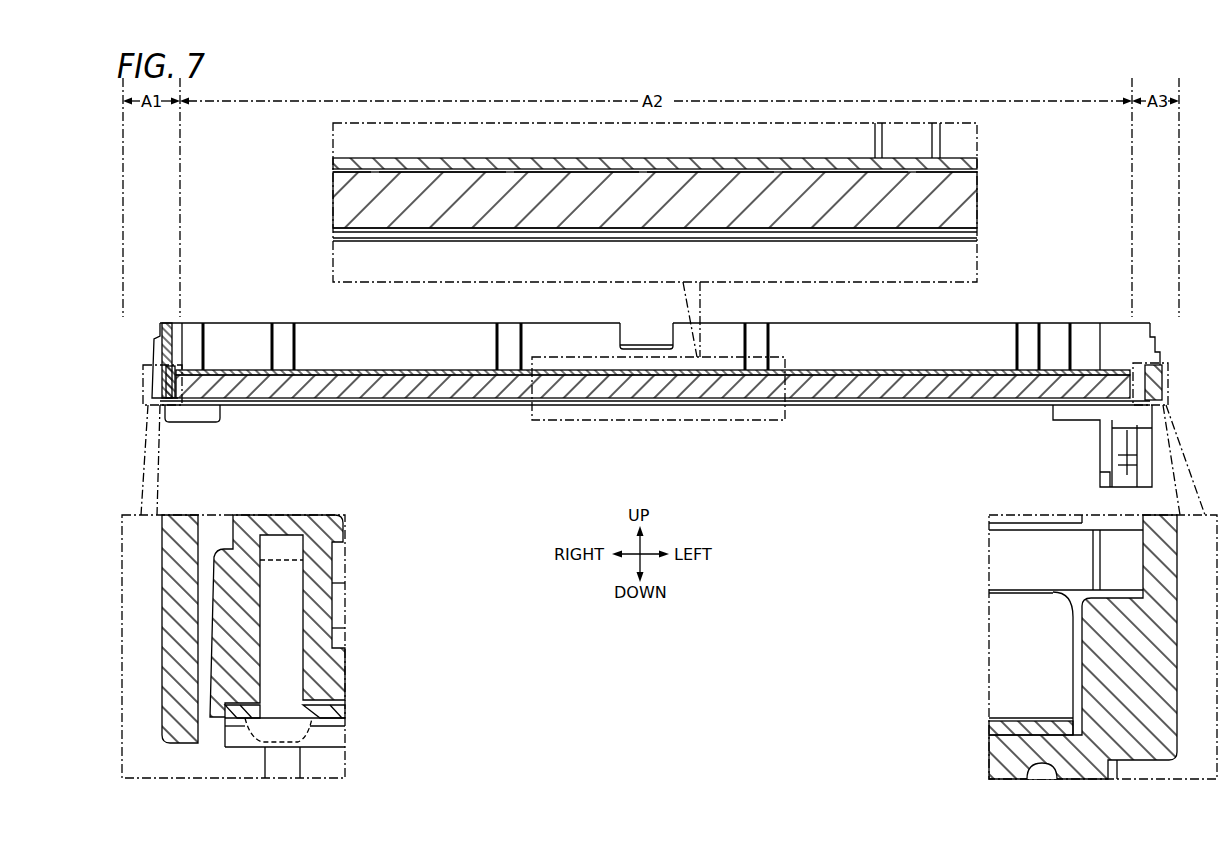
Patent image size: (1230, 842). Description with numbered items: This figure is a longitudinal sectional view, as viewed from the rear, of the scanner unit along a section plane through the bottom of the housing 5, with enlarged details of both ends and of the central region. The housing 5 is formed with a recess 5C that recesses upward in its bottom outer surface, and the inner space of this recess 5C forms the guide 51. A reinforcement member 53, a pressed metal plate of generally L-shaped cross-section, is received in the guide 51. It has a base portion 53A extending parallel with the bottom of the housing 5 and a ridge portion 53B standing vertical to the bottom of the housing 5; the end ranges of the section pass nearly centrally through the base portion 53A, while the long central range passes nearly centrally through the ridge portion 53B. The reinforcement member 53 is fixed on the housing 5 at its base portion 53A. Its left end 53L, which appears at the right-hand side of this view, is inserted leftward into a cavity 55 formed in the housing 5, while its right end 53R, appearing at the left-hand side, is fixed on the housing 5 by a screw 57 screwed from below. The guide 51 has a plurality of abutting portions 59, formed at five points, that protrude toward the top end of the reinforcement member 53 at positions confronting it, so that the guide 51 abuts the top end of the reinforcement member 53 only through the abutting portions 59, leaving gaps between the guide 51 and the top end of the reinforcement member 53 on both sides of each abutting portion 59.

The housing 5 is at (816, 234).
The guide 51 is at (905, 372).
The reinforcement member 53 is at (905, 400).
The base portion 53A is at (990, 727).
The ridge portion 53B is at (333, 196).
The left end 53L is at (990, 602).
The right end 53R is at (345, 708).
The cavity 55 is at (1040, 646).
The screw 57 is at (306, 748).
The abutting portions 59 is at (375, 172).
The recess 5C is at (242, 735).